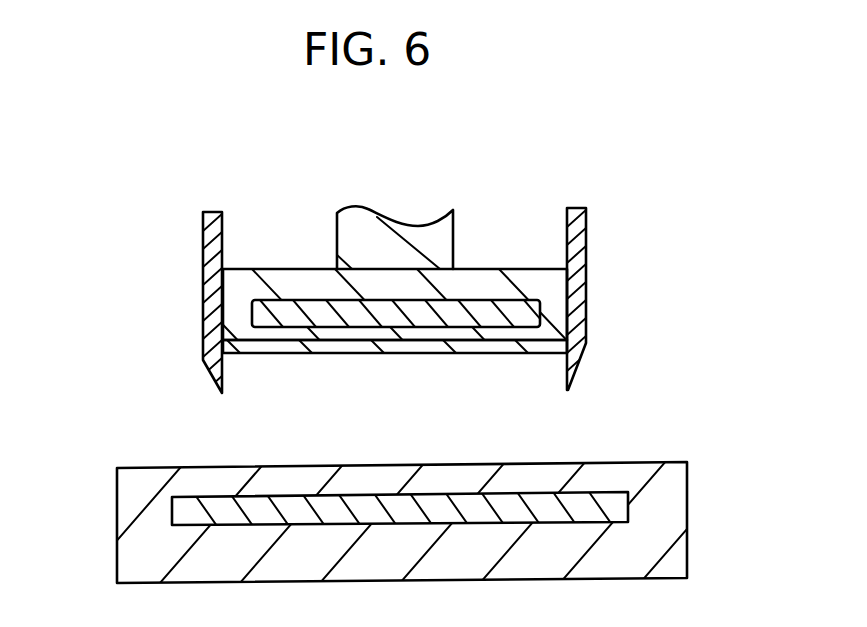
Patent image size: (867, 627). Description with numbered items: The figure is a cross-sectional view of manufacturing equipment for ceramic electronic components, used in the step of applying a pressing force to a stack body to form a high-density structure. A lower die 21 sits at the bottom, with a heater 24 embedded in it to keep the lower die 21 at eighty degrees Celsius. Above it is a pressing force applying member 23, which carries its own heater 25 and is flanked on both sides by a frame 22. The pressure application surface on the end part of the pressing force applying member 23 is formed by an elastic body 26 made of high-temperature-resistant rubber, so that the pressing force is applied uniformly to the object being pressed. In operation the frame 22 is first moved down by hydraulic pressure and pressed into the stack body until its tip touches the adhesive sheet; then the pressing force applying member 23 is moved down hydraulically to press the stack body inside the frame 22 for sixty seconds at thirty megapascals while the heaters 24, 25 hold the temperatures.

The lower die 21 is at (670, 520).
The frame 22 is at (205, 273).
The pressing force applying member 23 is at (470, 275).
The heater 24 is at (177, 517).
The heater 25 is at (297, 303).
The elastic body 26 is at (358, 347).